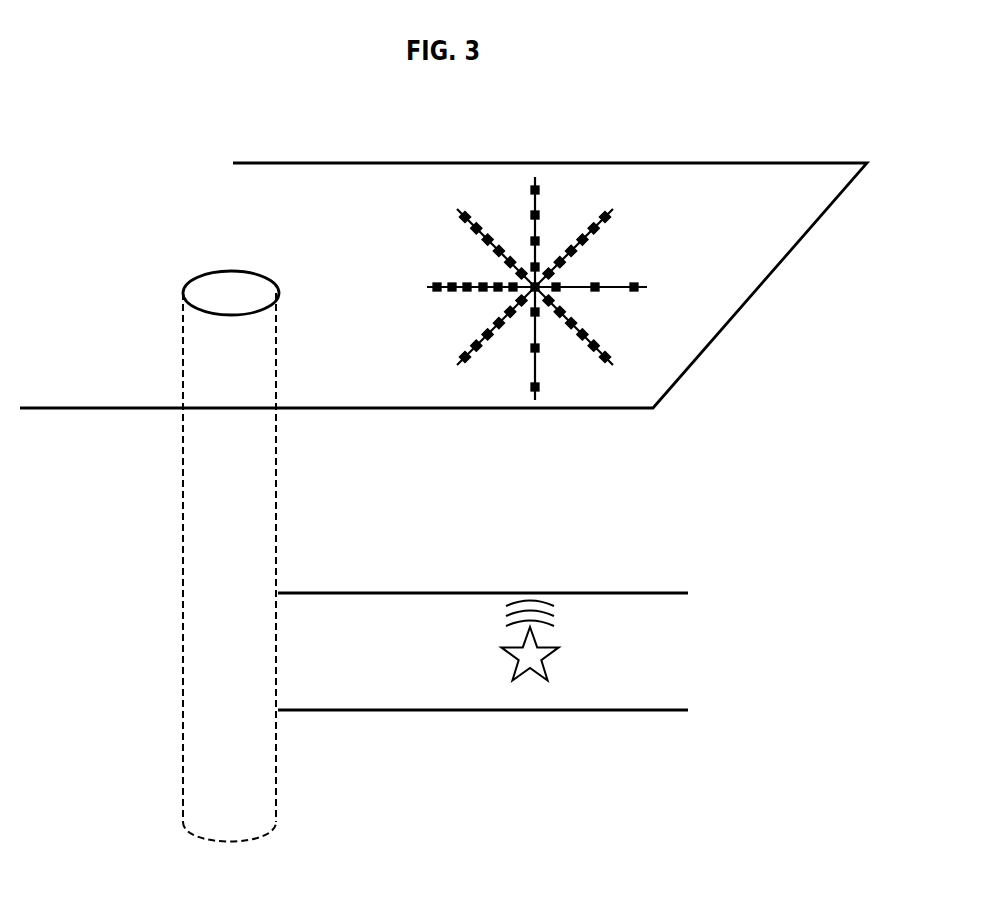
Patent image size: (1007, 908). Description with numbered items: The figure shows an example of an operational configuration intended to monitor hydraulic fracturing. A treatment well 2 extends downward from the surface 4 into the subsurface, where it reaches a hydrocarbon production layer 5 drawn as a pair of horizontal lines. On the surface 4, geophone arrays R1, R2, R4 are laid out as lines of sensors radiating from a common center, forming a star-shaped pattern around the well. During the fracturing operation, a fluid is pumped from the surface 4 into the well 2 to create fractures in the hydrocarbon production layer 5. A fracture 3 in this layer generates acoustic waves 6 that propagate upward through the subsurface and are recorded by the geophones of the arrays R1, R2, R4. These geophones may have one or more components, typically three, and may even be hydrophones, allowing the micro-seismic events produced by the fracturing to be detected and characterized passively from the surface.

The treatment well 2 is at (276, 473).
The fracture 3 is at (544, 667).
The surface 4 is at (723, 303).
The hydrocarbon production layer 5 is at (667, 677).
The acoustic waves 6 is at (545, 602).
The geophone array R1 is at (540, 190).
The geophone array R2 is at (531, 215).
The geophone array R4 is at (540, 387).